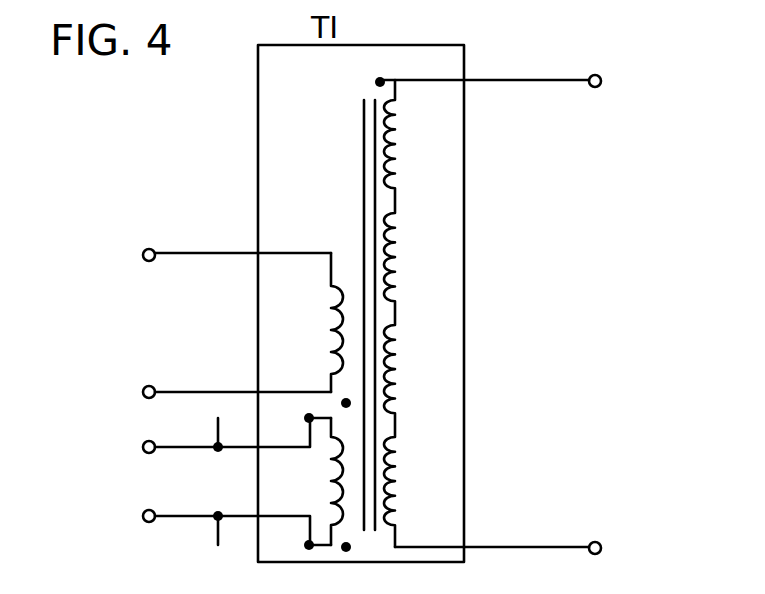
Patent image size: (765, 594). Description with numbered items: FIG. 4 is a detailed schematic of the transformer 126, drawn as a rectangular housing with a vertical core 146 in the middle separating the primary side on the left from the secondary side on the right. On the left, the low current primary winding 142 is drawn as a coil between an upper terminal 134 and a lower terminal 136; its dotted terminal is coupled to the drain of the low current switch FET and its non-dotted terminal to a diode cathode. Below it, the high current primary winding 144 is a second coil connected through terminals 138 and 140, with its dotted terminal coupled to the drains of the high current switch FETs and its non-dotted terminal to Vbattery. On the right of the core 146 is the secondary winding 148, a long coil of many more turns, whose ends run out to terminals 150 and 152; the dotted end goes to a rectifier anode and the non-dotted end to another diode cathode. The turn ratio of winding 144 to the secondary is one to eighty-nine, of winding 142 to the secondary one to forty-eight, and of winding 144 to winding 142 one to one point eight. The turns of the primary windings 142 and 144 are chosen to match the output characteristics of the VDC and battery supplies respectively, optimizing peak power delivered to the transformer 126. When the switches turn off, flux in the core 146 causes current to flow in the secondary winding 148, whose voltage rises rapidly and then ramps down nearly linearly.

The transformer 126 is at (258, 109).
The first primary terminal 134 is at (152, 248).
The second primary terminal 136 is at (152, 386).
The third primary terminal 138 is at (152, 441).
The fourth primary terminal 140 is at (152, 510).
The low current primary winding 142 is at (333, 338).
The high current primary winding 144 is at (335, 492).
The core 146 is at (361, 195).
The secondary winding 148 is at (393, 147).
The first secondary terminal 150 is at (601, 78).
The second secondary terminal 152 is at (601, 545).